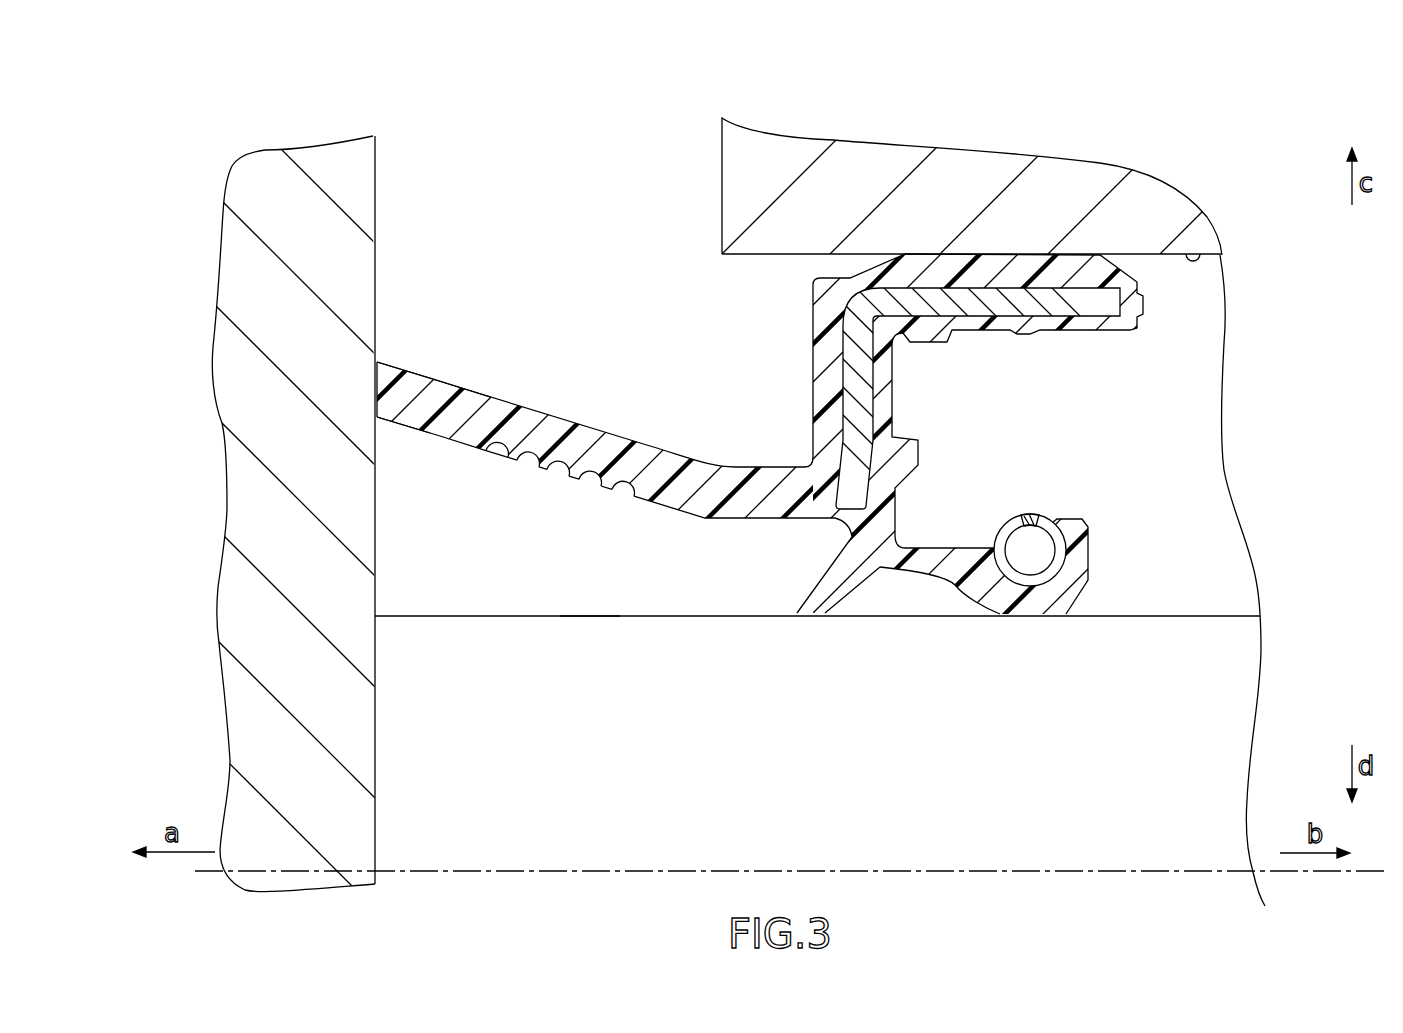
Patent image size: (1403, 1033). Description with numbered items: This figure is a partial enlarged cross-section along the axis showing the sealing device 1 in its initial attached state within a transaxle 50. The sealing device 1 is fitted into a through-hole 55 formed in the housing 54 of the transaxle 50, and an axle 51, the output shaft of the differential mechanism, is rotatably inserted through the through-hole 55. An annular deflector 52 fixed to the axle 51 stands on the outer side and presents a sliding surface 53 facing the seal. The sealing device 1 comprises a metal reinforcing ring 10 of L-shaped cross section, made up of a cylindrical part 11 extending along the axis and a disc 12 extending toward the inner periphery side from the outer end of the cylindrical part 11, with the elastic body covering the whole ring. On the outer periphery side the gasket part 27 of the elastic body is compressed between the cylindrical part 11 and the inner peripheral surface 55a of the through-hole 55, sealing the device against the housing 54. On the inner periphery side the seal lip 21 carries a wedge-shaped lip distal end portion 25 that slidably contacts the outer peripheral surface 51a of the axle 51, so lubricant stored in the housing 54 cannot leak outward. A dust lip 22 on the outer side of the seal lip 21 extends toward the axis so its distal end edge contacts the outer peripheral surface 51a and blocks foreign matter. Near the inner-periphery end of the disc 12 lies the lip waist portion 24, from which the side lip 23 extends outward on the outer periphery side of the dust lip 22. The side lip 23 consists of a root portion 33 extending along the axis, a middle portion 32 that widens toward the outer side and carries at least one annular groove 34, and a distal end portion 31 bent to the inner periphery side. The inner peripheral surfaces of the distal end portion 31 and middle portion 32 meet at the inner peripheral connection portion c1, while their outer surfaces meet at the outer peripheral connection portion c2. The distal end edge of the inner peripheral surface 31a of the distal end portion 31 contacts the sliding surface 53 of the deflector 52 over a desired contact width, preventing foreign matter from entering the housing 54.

The sealing device 1 is at (1205, 345).
The reinforcing ring 10 is at (982, 400).
The cylindrical part 11 is at (1102, 300).
The disc 12 is at (865, 400).
The seal lip 21 is at (983, 585).
The dust lip 22 is at (825, 600).
The side lip 23 is at (606, 444).
The lip waist portion 24 is at (890, 520).
The lip distal end portion 25 is at (1045, 603).
The gasket part 27 is at (1030, 262).
The distal end portion 31 is at (420, 422).
The inner peripheral surface 31a is at (420, 425).
The middle portion 32 is at (557, 516).
The root portion 33 is at (750, 505).
The groove 34 is at (492, 455).
The transaxle 50 is at (701, 470).
The axle 51 is at (841, 616).
The outer peripheral surface 51a is at (590, 616).
The deflector 52 is at (328, 481).
The sliding surface 53 is at (375, 207).
The housing 54 is at (956, 193).
The through-hole 55 is at (720, 280).
The inner peripheral surface 55a is at (1193, 250).
The inner peripheral connection portion c1 is at (470, 440).
The outer peripheral connection portion c2 is at (478, 425).